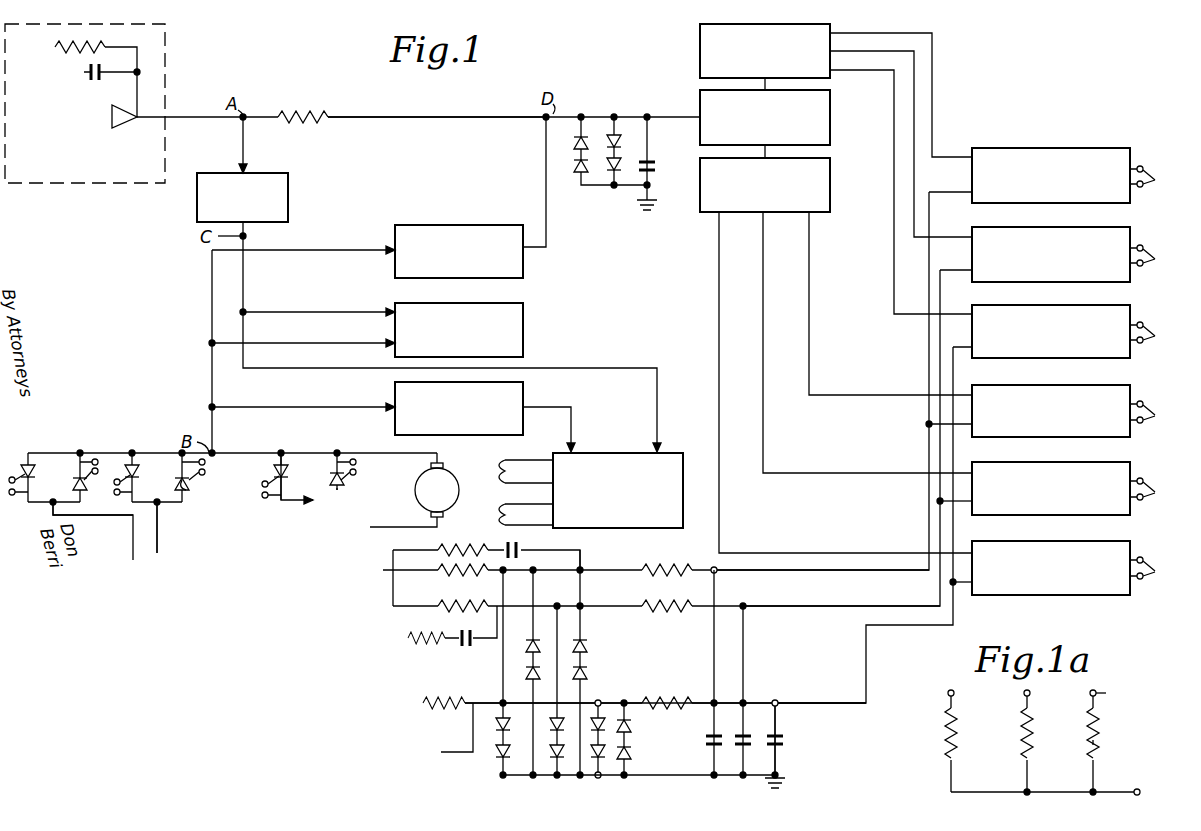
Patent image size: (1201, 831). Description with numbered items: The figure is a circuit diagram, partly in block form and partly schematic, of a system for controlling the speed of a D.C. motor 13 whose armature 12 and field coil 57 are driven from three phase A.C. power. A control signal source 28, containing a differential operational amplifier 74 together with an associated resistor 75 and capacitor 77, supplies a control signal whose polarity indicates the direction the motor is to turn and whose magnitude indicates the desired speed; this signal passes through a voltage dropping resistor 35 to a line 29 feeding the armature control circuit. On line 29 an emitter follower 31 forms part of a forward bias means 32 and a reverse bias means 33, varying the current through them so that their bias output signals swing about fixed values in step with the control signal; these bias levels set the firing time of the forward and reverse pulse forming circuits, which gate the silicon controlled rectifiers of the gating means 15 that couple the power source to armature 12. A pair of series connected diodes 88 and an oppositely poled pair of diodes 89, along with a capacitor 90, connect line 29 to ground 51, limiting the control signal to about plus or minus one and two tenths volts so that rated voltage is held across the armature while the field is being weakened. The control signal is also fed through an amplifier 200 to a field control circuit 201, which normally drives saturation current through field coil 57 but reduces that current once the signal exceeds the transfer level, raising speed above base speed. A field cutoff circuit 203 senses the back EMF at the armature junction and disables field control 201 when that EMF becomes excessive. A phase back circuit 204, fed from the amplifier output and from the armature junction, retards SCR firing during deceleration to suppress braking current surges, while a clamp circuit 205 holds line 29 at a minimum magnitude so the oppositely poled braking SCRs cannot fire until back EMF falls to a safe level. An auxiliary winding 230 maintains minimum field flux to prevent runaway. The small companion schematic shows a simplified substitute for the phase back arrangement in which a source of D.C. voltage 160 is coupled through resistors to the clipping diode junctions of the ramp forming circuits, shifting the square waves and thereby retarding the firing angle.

In FIG. 1, the control signal source 28 is at (94, 178).
In FIG. 1, the resistor 75 is at (58, 47).
In FIG. 1, the capacitor 77 is at (84, 72).
In FIG. 1, the differential operational amplifier 74 is at (127, 128).
In FIG. 1, the resistor 35 is at (313, 115).
In FIG. 1, the line 29 is at (448, 113).
In FIG. 1, the oppositely poled series connected diodes 89 is at (580, 140).
In FIG. 1, the series connected diodes 88 is at (617, 146).
In FIG. 1, the capacitor 90 is at (652, 164).
In FIG. 1, the ground 51 is at (658, 202).
In FIG. 1, the reverse bias means 33 is at (700, 52).
In FIG. 1, the emitter follower 31 is at (830, 116).
In FIG. 1, the forward bias means 32 is at (830, 188).
In FIG. 1, the amplifier 200 is at (290, 188).
In FIG. 1, the clamp circuit 205 is at (462, 224).
In FIG. 1, the phase back circuit 204 is at (523, 330).
In FIG. 1, the field cutoff circuit 203 is at (523, 393).
In FIG. 1, the field control circuit 201 is at (636, 452).
In FIG. 1, the field coil 57 is at (522, 454).
In FIG. 1, the auxiliary winding 230 is at (504, 515).
In FIG. 1, the armature 12 is at (446, 500).
In FIG. 1, the D.C. motor 13 is at (473, 472).
In FIG. 1, the gating means 15 is at (235, 507).
In FIG. 1A, the source of D.C. voltage 160 is at (1137, 790).